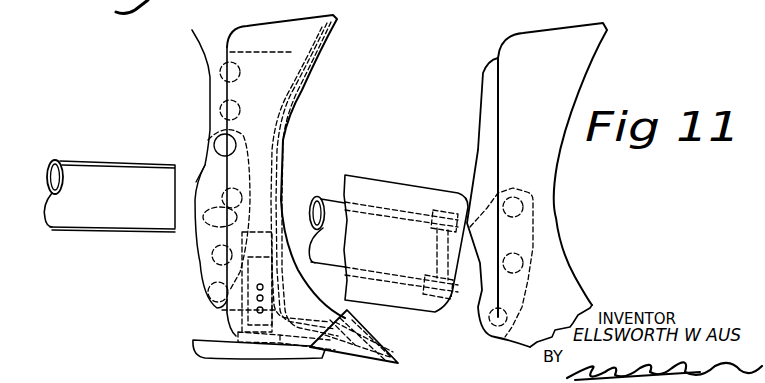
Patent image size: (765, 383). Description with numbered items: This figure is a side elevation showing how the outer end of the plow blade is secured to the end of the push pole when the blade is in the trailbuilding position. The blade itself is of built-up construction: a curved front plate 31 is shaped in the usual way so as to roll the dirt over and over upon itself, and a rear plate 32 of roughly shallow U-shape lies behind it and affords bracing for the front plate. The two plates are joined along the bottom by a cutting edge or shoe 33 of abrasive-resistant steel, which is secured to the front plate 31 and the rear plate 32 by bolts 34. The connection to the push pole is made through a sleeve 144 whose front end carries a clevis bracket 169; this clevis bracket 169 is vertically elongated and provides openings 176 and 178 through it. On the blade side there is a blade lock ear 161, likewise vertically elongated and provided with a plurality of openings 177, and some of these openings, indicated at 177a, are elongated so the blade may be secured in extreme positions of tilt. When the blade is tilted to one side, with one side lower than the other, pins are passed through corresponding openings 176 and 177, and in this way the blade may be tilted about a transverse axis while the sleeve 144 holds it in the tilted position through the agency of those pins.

The curved front plate 31 is at (310, 60).
The rear plate 32 is at (277, 85).
The cutting edge or shoe 33 is at (362, 350).
The bolts 34 is at (377, 334).
The sleeve 144 is at (88, 206).
The blade lock ear 161 is at (208, 93).
The clevis bracket 169 is at (190, 212).
The opening 176 is at (216, 137).
The openings 177 is at (221, 66).
The elongated openings 177a is at (189, 159).
The opening 178 is at (226, 196).